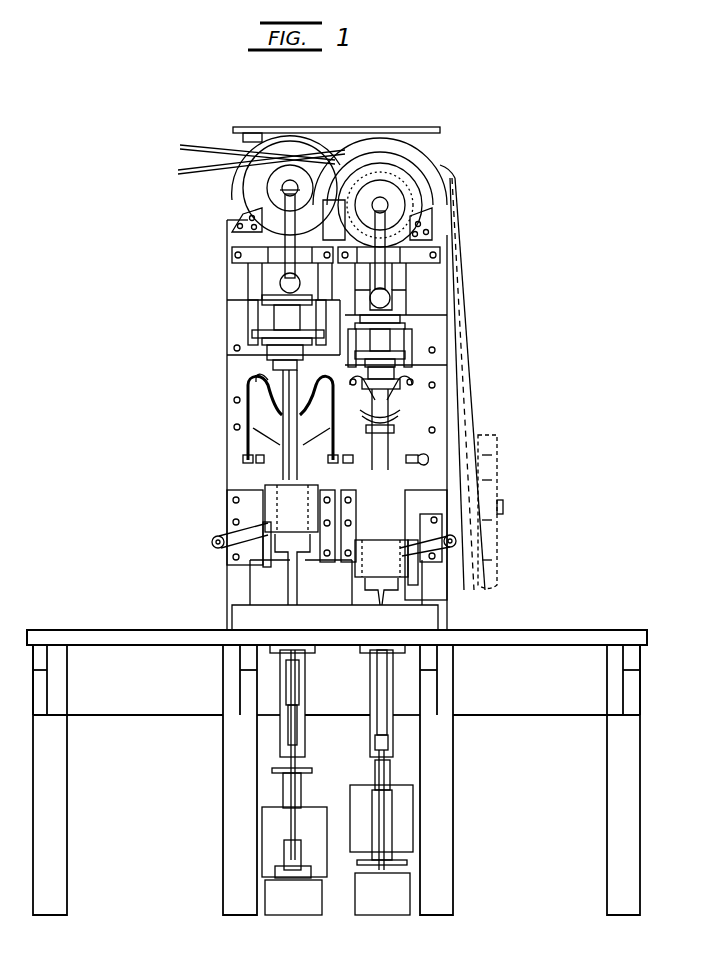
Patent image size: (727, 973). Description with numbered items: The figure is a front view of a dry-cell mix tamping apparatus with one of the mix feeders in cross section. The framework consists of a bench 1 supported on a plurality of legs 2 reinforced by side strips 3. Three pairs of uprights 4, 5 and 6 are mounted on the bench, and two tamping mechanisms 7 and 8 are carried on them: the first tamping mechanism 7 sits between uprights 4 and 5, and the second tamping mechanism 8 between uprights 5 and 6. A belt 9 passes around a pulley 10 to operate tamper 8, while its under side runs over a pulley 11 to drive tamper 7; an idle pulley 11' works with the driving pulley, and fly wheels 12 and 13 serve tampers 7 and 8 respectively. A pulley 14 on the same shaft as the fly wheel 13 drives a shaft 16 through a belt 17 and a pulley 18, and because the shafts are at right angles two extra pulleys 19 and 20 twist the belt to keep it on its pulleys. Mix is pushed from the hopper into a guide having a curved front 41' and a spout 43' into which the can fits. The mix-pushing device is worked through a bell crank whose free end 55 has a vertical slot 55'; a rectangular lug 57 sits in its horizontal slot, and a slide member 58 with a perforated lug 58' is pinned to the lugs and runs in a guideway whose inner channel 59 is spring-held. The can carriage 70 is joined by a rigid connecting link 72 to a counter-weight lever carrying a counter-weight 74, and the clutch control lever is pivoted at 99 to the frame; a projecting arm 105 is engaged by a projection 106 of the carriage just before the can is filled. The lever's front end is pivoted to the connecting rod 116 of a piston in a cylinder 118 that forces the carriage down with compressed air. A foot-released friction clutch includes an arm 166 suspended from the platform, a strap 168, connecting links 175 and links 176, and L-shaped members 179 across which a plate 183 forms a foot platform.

The bench 1 is at (100, 637).
The legs 2 is at (58, 830).
The side strips 3 is at (43, 690).
The uprights 4 is at (227, 592).
The uprights 5 is at (359, 547).
The uprights 6 is at (437, 598).
The tamping mechanism 7 is at (227, 355).
The tamping mechanism 8 is at (400, 380).
The belt 9 is at (200, 175).
The pulley 10 is at (374, 160).
The pulley 11 is at (302, 488).
The idle pulley 11' is at (278, 140).
The fly wheel 12 is at (234, 193).
The fly wheel 13 is at (430, 150).
The pulley 14 is at (420, 190).
The shaft 16 is at (503, 506).
The belt 17 is at (460, 275).
The pulley 18 is at (490, 470).
The pulley 19 is at (440, 230).
The pulley 20 is at (440, 168).
The curved front 41' is at (267, 463).
The spout 43' is at (287, 458).
The free end of bell crank 55 is at (411, 472).
The vertical slot 55' is at (341, 472).
The rectangular lug 57 is at (430, 467).
The slide member 58 is at (256, 395).
The perforated lug 58' is at (258, 422).
The inner channel 59 is at (366, 430).
The can carriage 70 is at (262, 520).
The connecting link 72 is at (298, 597).
The counter-weight 74 is at (262, 848).
The pivot of clutch control lever 99 is at (265, 372).
The projecting arm 105 is at (270, 568).
The projection 106 is at (270, 492).
The connecting rod 116 is at (300, 702).
The cylinder 118 is at (370, 681).
The arm 166 is at (380, 702).
The strap 168 is at (375, 745).
The connecting link 175 is at (282, 674).
The link 176 is at (286, 702).
The L-shaped member 179 is at (300, 737).
The plate 183 is at (305, 768).